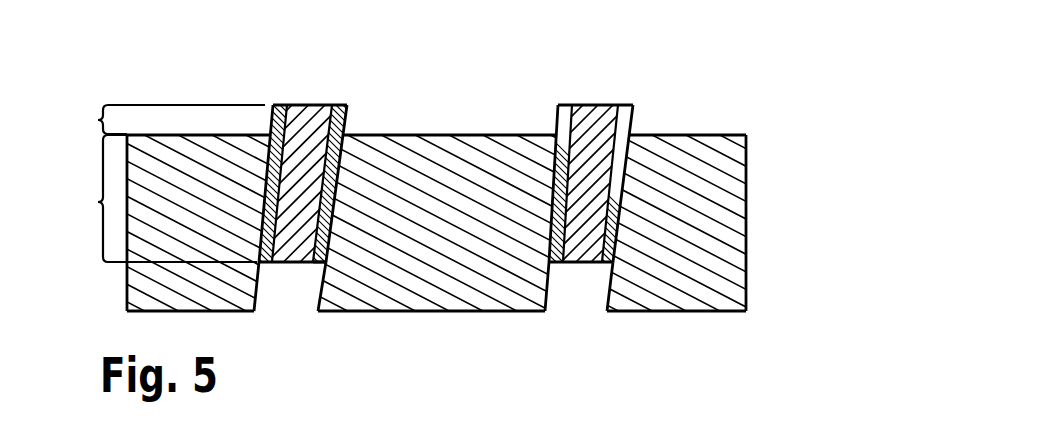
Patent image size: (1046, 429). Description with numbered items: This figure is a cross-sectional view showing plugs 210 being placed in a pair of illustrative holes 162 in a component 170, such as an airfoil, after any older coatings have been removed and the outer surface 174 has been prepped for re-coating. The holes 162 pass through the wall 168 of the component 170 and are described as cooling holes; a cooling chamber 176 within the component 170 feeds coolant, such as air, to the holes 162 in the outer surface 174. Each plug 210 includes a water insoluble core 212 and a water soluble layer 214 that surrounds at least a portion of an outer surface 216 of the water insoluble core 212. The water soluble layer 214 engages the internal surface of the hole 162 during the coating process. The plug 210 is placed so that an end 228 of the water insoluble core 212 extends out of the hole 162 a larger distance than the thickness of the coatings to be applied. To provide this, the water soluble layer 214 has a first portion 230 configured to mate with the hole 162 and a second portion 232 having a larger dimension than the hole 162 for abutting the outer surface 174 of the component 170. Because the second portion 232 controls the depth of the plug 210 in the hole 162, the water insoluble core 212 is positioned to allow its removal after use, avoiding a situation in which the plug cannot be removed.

The hole 162 is at (615, 212).
The wall 168 is at (728, 245).
The component 170 is at (512, 216).
The outer surface 174 is at (662, 135).
The cooling chamber 176 is at (470, 378).
The plug 210 is at (286, 88).
The water insoluble core 212 is at (323, 111).
The water soluble layer 214 is at (277, 255).
The outer surface of water insoluble core 216 is at (323, 252).
The end of water insoluble core 228 is at (294, 118).
The first portion 230 is at (98, 120).
The second portion 232 is at (98, 202).